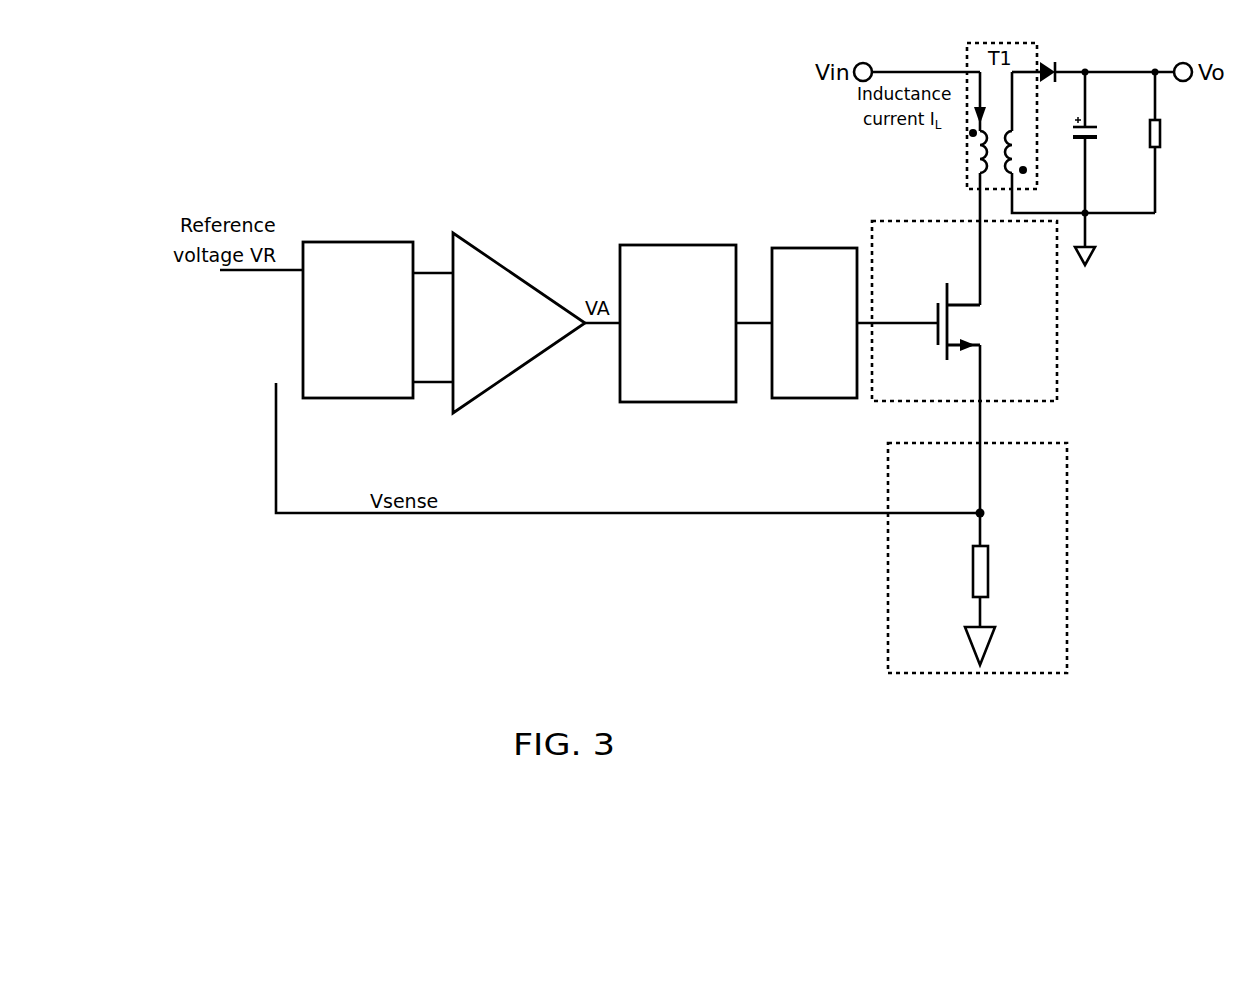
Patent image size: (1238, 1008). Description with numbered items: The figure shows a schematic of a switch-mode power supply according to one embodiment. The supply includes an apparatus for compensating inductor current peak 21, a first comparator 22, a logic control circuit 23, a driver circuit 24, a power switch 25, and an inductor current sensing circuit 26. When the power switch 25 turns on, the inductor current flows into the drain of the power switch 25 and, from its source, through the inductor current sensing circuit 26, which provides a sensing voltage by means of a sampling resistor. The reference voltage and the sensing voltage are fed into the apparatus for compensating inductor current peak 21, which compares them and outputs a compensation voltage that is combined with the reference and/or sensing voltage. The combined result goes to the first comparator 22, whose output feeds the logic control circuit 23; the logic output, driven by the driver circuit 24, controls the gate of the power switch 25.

The apparatus for compensating inductor current peak 21 is at (358, 320).
The first comparator 22 is at (519, 323).
The logic control circuit 23 is at (678, 323).
The driver circuit 24 is at (814, 323).
The power switch 25 is at (964, 311).
The inductor current sensing circuit 26 is at (977, 558).